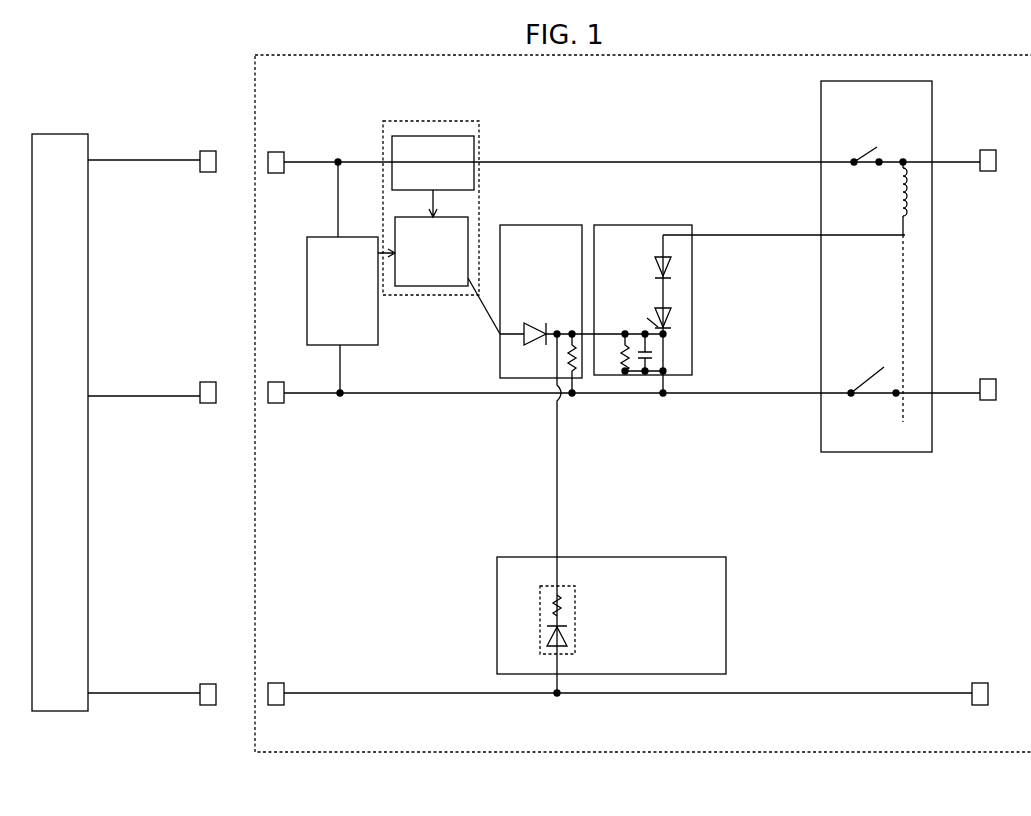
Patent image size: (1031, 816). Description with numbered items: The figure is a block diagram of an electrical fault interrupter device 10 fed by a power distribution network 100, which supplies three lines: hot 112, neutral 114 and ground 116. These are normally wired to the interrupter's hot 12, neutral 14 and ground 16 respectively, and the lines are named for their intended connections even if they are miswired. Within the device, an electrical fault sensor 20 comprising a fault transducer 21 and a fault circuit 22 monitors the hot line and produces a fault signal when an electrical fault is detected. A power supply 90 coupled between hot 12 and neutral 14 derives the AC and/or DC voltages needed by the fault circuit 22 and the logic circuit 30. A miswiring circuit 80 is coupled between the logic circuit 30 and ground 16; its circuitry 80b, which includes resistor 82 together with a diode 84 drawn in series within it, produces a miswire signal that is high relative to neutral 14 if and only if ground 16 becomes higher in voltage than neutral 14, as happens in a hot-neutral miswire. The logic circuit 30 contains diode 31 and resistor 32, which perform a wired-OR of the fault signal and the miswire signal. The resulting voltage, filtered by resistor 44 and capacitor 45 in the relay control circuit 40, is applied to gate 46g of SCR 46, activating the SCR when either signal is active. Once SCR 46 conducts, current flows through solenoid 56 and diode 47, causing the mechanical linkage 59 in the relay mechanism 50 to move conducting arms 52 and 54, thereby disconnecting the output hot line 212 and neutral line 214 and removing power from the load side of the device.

The electrical fault interrupter device 10 is at (400, 752).
The power distribution network 100 is at (60, 422).
The hot line of power distribution network 112 is at (116, 159).
The neutral line of power distribution network 114 is at (118, 395).
The ground line of power distribution network 116 is at (118, 692).
The hot line 12 is at (362, 160).
The neutral line 14 is at (370, 393).
The ground line 16 is at (324, 692).
The electrical fault sensor 20 is at (430, 121).
The fault transducer 21 is at (433, 163).
The fault circuit 22 is at (447, 262).
The logic circuit 30 is at (581, 459).
The diode 31 is at (530, 330).
The resistor 32 is at (573, 373).
The relay control circuit 40 is at (749, 310).
The resistor 44 is at (625, 373).
The capacitor 45 is at (652, 355).
The SCR 46 is at (671, 316).
The gate of SCR 46g is at (637, 315).
The diode 47 is at (671, 264).
The relay mechanism 50 is at (876, 266).
The conducting arm 52 is at (873, 147).
The conducting arm 54 is at (866, 379).
The solenoid 56 is at (908, 194).
The mechanical linkage 59 is at (905, 260).
The miswiring circuit 80 is at (611, 615).
The miswiring circuitry 80b is at (575, 612).
The resistor 82 is at (553, 600).
The diode 84 is at (547, 640).
The power supply 90 is at (351, 277).
The hot line 212 is at (954, 160).
The neutral line 214 is at (955, 395).